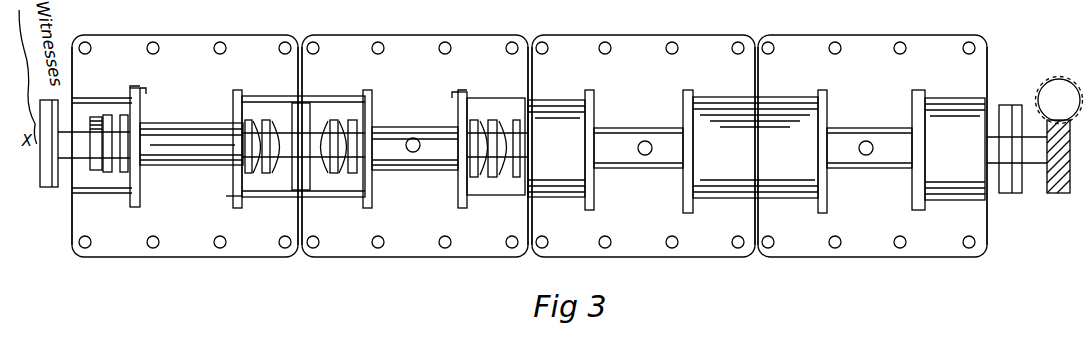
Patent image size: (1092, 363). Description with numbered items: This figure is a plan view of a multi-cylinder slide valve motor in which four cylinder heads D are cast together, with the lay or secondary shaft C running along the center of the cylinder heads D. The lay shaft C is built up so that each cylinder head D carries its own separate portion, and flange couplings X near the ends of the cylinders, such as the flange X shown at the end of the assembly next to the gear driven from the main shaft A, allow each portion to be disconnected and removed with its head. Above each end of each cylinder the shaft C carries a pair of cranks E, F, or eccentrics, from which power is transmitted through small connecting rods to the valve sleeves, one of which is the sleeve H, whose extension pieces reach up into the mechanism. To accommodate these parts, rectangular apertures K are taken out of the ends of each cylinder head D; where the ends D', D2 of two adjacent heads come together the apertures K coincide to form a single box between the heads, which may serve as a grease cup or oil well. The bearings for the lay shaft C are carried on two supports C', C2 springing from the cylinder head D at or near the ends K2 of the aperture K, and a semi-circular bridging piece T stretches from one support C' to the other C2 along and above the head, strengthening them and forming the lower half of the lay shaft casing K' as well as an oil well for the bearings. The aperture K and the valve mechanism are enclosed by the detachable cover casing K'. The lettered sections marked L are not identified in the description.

The main shaft A is at (1058, 194).
The lay or secondary shaft C is at (552, 173).
The support C' is at (479, 160).
The support C2 is at (238, 208).
The cylinder head D is at (529, 160).
The end of cylinder head D' is at (630, 147).
The end of cylinder head D2 is at (100, 256).
The crank E is at (97, 172).
The crank F is at (109, 172).
The valve sleeve H is at (238, 197).
The aperture K is at (298, 168).
The detachable cover casing K' is at (756, 138).
The end of aperture K2 is at (140, 90).
The shaft section L is at (416, 152).
The semi-circular bridging piece T is at (185, 125).
The flange coupling X is at (304, 192).